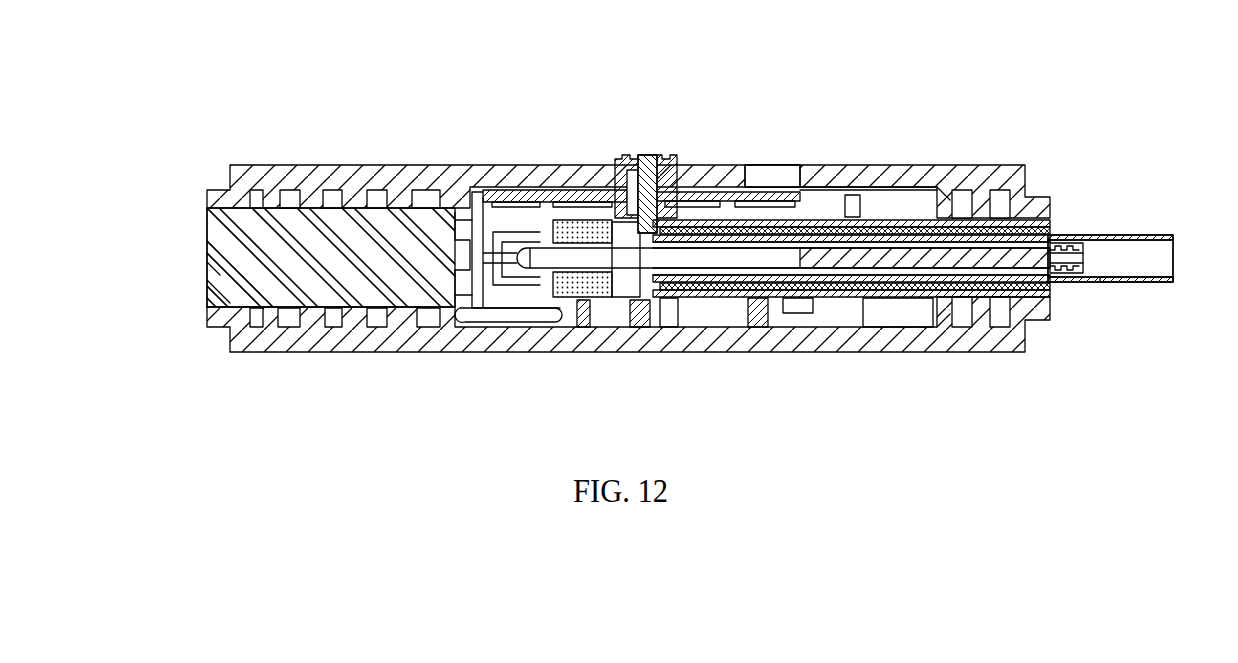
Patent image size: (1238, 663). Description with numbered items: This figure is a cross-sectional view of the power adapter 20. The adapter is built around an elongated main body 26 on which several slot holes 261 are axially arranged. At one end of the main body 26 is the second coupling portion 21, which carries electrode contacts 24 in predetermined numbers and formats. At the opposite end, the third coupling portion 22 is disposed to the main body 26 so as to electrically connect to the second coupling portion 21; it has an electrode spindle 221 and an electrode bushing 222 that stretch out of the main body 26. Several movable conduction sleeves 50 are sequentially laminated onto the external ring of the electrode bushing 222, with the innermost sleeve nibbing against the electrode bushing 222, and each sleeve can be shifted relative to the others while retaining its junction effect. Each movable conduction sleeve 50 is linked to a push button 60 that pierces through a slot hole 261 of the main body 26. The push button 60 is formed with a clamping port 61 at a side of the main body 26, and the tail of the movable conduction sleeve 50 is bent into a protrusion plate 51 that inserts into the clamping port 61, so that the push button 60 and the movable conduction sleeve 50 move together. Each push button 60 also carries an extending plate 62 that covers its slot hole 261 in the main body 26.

The power adapter 20 is at (224, 163).
The second coupling portion 21 is at (205, 245).
The third coupling portion 22 is at (1176, 250).
The electrode spindle 221 is at (1062, 264).
The electrode bushing 222 is at (1150, 283).
The electrode contacts 24 is at (328, 217).
The main body 26 is at (265, 335).
The slot hole 261 is at (790, 185).
The movable conduction sleeve 50 is at (1050, 222).
The protrusion plate 51 is at (672, 185).
The push button 60 is at (647, 215).
The clamping port 61 is at (652, 192).
The extending plate 62 is at (500, 190).